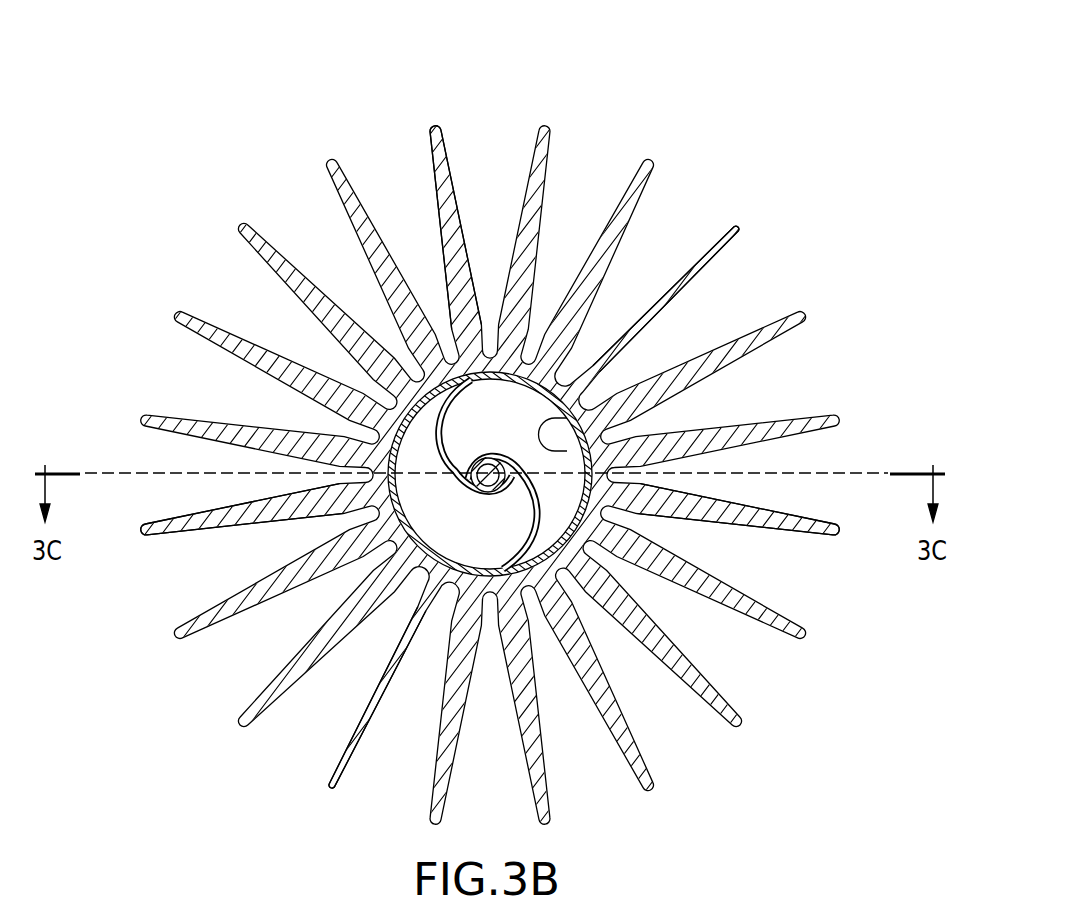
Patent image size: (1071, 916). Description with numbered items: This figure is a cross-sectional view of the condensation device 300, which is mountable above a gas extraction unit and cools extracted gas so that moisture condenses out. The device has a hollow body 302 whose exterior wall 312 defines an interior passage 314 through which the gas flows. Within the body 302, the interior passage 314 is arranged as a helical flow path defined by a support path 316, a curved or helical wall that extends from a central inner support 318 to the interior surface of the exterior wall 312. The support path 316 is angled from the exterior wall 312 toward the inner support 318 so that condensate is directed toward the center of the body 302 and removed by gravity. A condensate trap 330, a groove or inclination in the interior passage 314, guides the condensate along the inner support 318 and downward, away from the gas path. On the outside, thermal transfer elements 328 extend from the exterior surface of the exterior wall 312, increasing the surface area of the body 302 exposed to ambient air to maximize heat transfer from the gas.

The condensation device 300 is at (196, 110).
The body 302 is at (567, 590).
The exterior wall 312 is at (375, 487).
The interior passage 314 is at (420, 459).
The support path 316 is at (568, 418).
The inner support 318 is at (485, 465).
The thermal transfer elements 328 is at (440, 193).
The condensate trap 330 is at (472, 488).